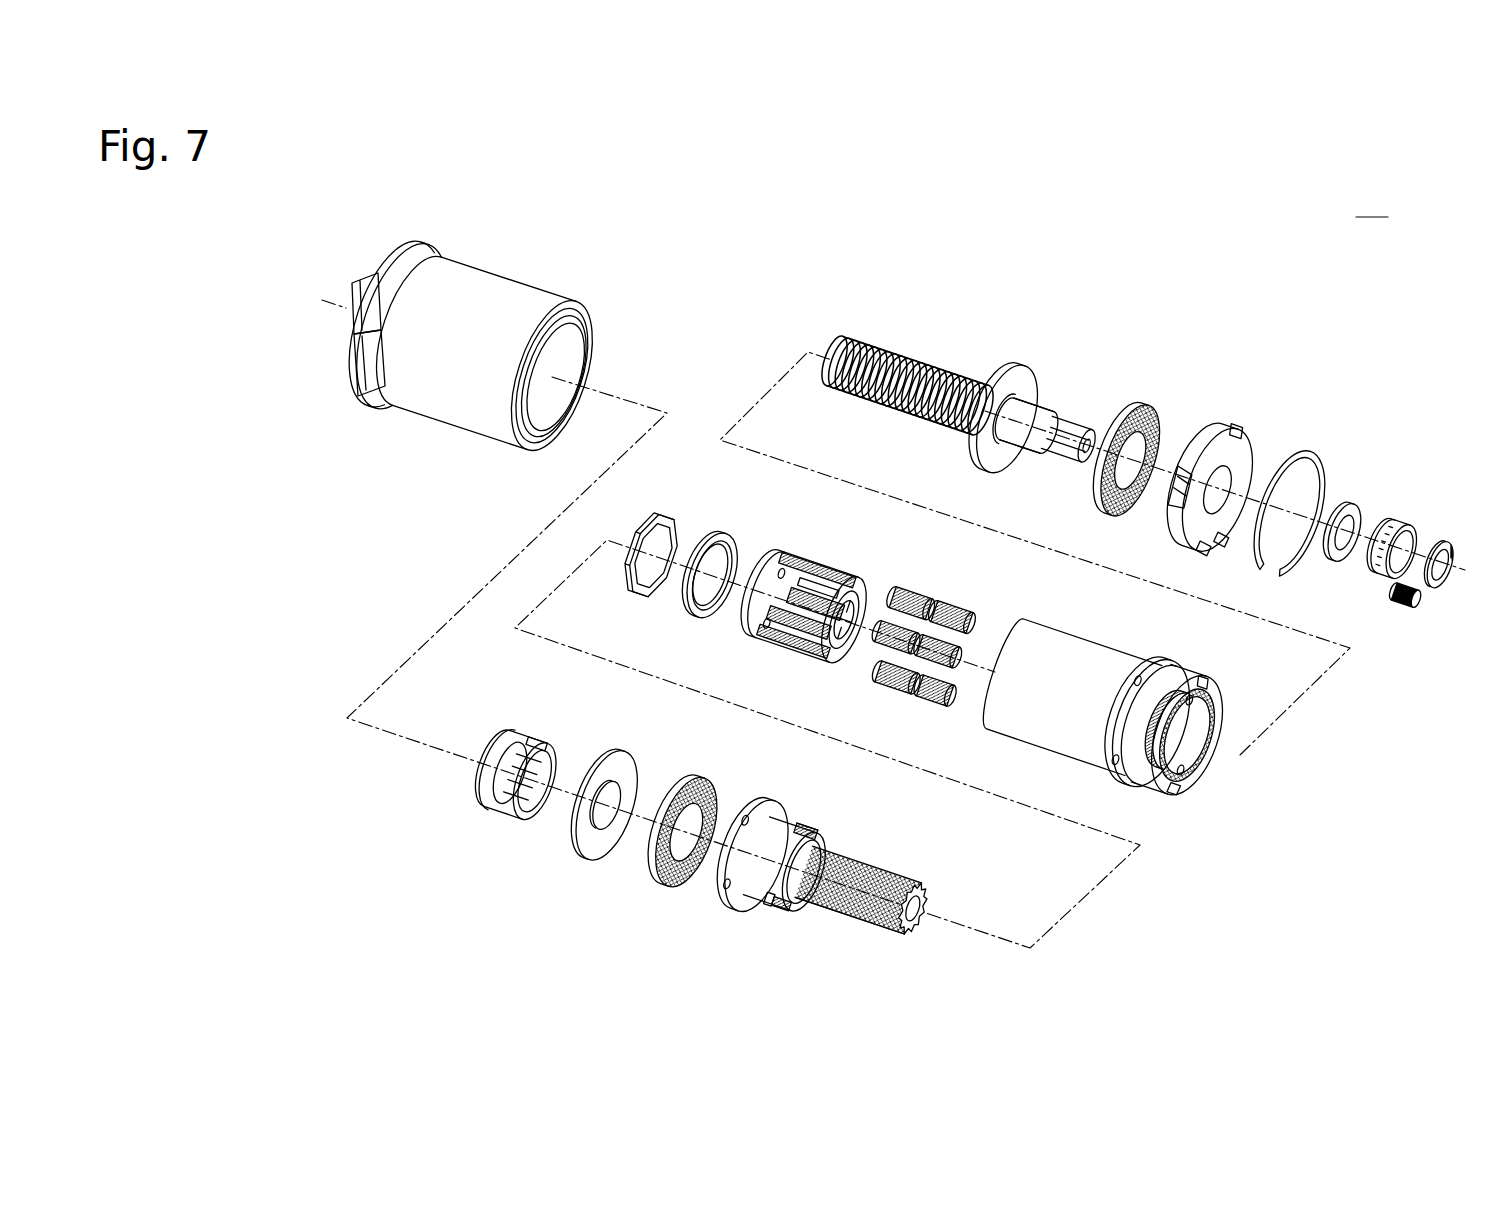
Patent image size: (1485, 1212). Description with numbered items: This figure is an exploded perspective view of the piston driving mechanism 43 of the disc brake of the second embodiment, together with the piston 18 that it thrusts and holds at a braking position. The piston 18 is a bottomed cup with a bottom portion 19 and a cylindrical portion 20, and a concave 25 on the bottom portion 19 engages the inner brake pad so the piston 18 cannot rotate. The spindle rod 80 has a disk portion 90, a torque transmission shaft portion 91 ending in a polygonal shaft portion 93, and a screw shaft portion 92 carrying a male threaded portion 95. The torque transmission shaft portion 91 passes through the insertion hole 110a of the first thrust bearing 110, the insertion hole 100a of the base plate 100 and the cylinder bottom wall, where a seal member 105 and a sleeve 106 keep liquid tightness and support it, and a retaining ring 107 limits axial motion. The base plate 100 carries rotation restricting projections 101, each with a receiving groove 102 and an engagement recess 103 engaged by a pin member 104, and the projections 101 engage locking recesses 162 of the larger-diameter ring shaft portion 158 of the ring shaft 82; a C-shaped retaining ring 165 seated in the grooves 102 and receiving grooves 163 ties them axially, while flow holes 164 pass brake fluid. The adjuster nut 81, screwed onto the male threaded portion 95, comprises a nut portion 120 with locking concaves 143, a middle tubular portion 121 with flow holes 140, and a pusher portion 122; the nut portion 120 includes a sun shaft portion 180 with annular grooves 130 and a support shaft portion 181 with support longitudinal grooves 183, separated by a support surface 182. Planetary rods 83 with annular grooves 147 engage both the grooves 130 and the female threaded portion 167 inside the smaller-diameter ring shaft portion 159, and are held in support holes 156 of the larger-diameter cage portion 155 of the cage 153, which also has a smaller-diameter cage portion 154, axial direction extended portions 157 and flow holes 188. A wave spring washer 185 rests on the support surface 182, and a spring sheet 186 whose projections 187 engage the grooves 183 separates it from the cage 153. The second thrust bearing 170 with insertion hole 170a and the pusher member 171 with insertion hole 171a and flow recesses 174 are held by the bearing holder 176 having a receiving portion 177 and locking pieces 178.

The piston 18 is at (520, 270).
The bottom portion 19 is at (368, 300).
The cylindrical portion 20 is at (455, 410).
The concave 25 is at (358, 345).
The piston driving mechanism 43 is at (1346, 318).
The spindle rod 80 is at (1028, 350).
The adjuster nut 81 is at (872, 908).
The ring shaft 82 is at (1082, 638).
The planetary rods 83 is at (906, 600).
The disk portion 90 is at (1030, 352).
The torque transmission shaft portion 91 is at (1042, 420).
The screw shaft portion 92 is at (832, 342).
The polygonal shaft portion 93 is at (1076, 432).
The male threaded portion 95 is at (882, 346).
The base plate 100 is at (1201, 484).
The insertion hole 100a is at (1232, 480).
The rotation restricting projections 101 is at (1186, 465).
The receiving groove 102 is at (1182, 447).
The engagement recess 103 is at (1215, 548).
The pin member 104 is at (1407, 607).
The seal member 105 is at (1350, 505).
The sleeve 106 is at (1400, 516).
The retaining ring 107 is at (1444, 540).
The first thrust bearing 110 is at (1147, 402).
The insertion hole 110a is at (1132, 420).
The nut portion 120 is at (828, 806).
The middle tubular portion 121 is at (800, 826).
The pusher portion 122 is at (757, 805).
The annular grooves 130 is at (916, 870).
The flow holes 140 is at (737, 897).
The locking concaves 143 is at (930, 920).
The annular grooves 147 is at (952, 620).
The cage 153 is at (832, 566).
The smaller-diameter cage portion 154 is at (820, 660).
The larger-diameter cage portion 155 is at (775, 560).
The support holes 156 is at (772, 640).
The axial direction extended portions 157 is at (846, 582).
The larger-diameter ring shaft portion 158 is at (1226, 722).
The smaller-diameter ring shaft portion 159 is at (1052, 740).
The locking recesses 162 is at (1212, 688).
The receiving grooves 163 is at (1192, 700).
The flow holes 164 is at (1152, 690).
The retaining ring 165 is at (1312, 460).
The female threaded portion 167 is at (1200, 745).
The second thrust bearing 170 is at (656, 892).
The insertion hole 170a is at (706, 782).
The pusher member 171 is at (578, 872).
The insertion hole 171a is at (626, 790).
The flow recesses 174 is at (600, 758).
The bearing holder 176 is at (492, 806).
The receiving portion 177 is at (495, 742).
The locking pieces 178 is at (535, 752).
The sun shaft portion 180 is at (872, 860).
The support shaft portion 181 is at (822, 850).
The support surface 182 is at (792, 907).
The support longitudinal grooves 183 is at (797, 897).
The wave spring washer 185 is at (661, 516).
The spring sheet 186 is at (724, 538).
The projections 187 is at (706, 612).
The flow holes 188 is at (792, 562).